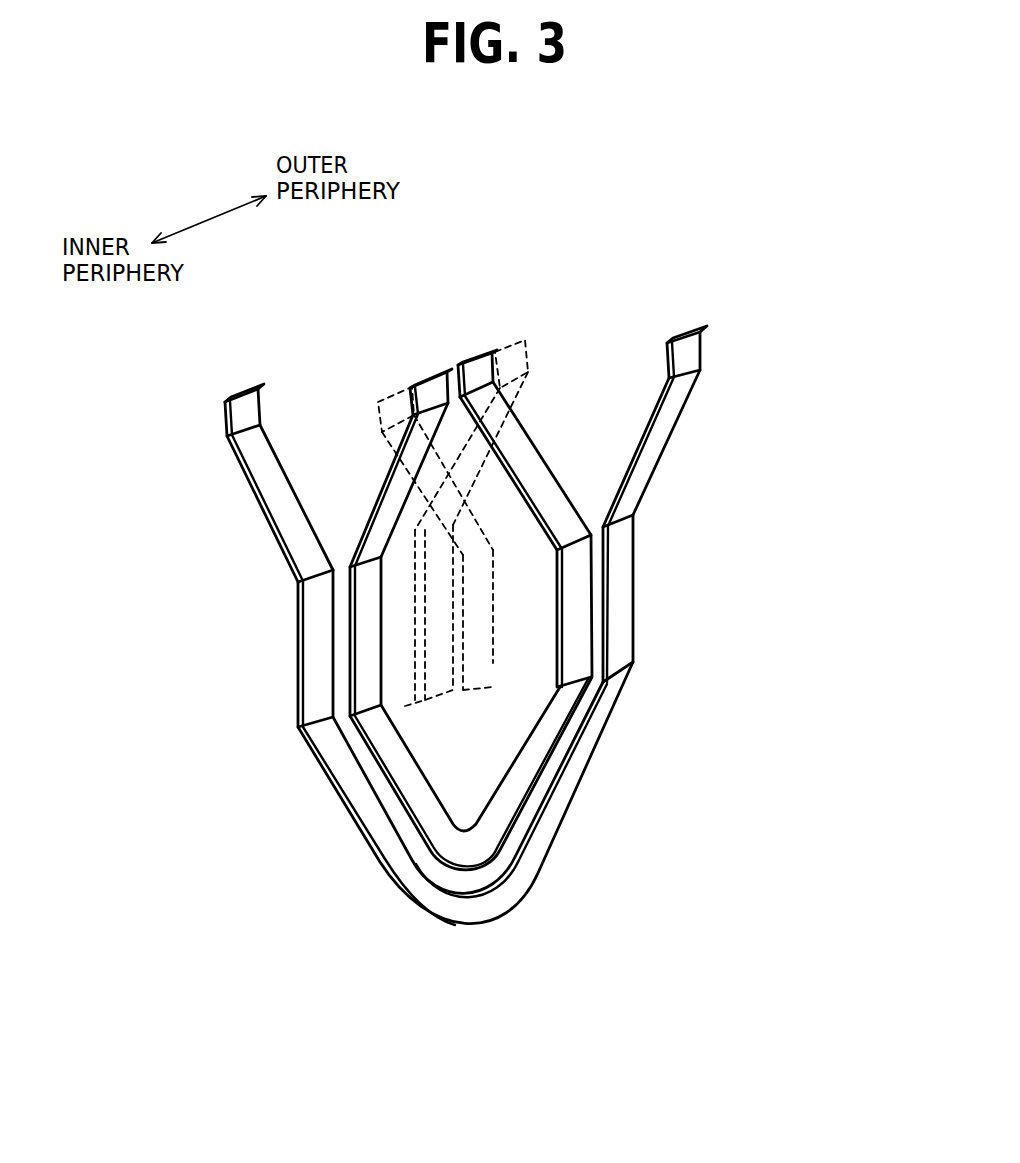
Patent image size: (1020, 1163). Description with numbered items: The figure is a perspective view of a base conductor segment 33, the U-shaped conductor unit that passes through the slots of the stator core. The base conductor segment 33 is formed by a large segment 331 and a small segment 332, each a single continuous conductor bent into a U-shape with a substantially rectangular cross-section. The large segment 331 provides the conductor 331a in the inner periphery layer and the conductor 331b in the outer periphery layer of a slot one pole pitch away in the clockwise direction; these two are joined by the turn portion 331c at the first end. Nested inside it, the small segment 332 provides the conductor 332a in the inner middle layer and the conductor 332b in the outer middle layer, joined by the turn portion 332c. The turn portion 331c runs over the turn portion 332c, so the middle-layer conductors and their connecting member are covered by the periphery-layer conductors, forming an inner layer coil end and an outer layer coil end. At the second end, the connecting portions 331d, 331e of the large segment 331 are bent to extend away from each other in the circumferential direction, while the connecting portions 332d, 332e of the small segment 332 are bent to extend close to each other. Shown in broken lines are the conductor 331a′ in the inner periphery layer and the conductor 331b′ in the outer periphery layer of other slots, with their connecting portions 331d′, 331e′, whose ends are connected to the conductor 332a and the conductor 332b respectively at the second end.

The base conductor segment 33 is at (367, 897).
The large segment 331 is at (677, 467).
The small segment 332 is at (557, 473).
The conductor in the inner periphery layer 331a is at (317, 610).
The conductor in the outer periphery layer 331b is at (618, 617).
The turn portion 331c is at (457, 913).
The connecting portion 331d is at (240, 415).
The connecting portion 331e is at (693, 350).
The conductor in the inner middle layer 332a is at (360, 653).
The conductor in the outer middle layer 332b is at (575, 663).
The turn portion 332c is at (467, 857).
The connecting portion 332d is at (437, 375).
The connecting portion 332e is at (487, 353).
The conductor in the inner periphery layer 331a′ is at (443, 663).
The conductor in the outer periphery layer 331b′ is at (457, 573).
The connecting portion 331d′ is at (370, 400).
The connecting portion 331e′ is at (523, 357).